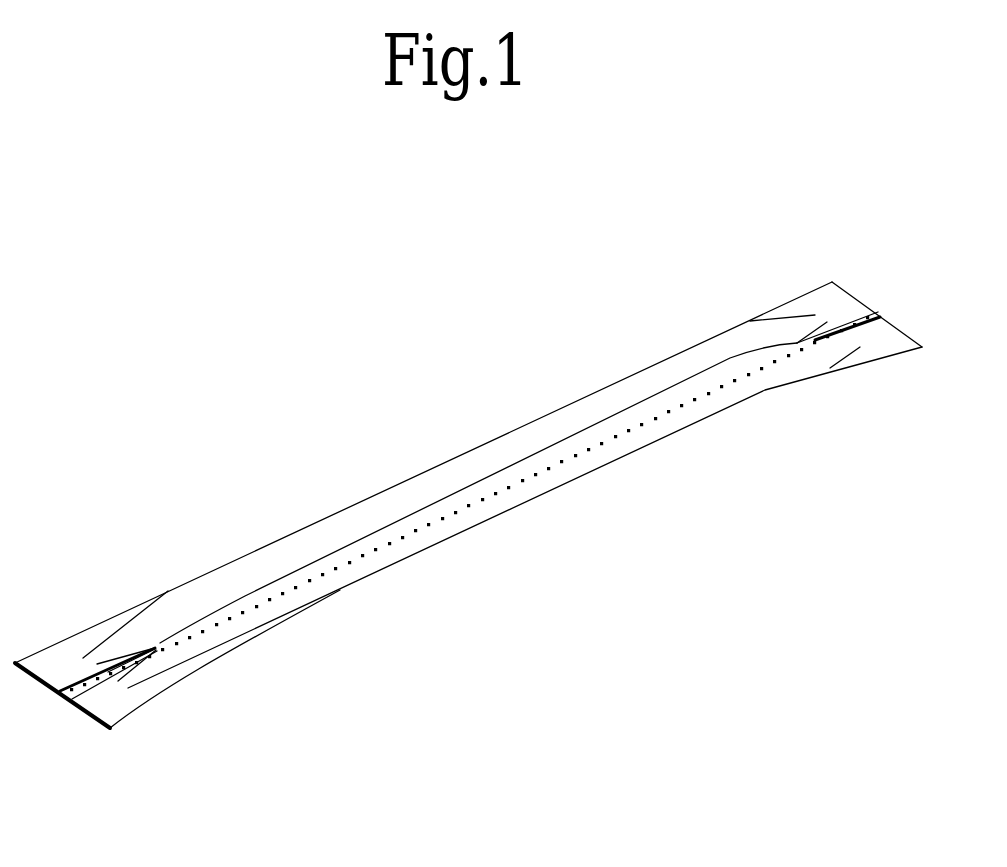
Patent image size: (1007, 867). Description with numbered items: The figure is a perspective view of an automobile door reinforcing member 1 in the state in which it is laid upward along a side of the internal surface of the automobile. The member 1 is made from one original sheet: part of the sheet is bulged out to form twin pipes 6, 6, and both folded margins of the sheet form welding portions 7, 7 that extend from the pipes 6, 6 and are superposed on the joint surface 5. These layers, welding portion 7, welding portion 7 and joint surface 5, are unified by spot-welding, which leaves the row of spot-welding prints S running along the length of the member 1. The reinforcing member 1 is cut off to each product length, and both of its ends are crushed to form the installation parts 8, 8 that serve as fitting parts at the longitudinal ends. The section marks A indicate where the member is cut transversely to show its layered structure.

The automobile door reinforcing member 1 is at (499, 422).
The joint surface 5 is at (90, 722).
The pipes 6 is at (260, 553).
The welding portions 7 is at (878, 312).
The installation part 8 is at (58, 663).
The spot-welding print S is at (612, 442).
The section line A- A is at (428, 463).